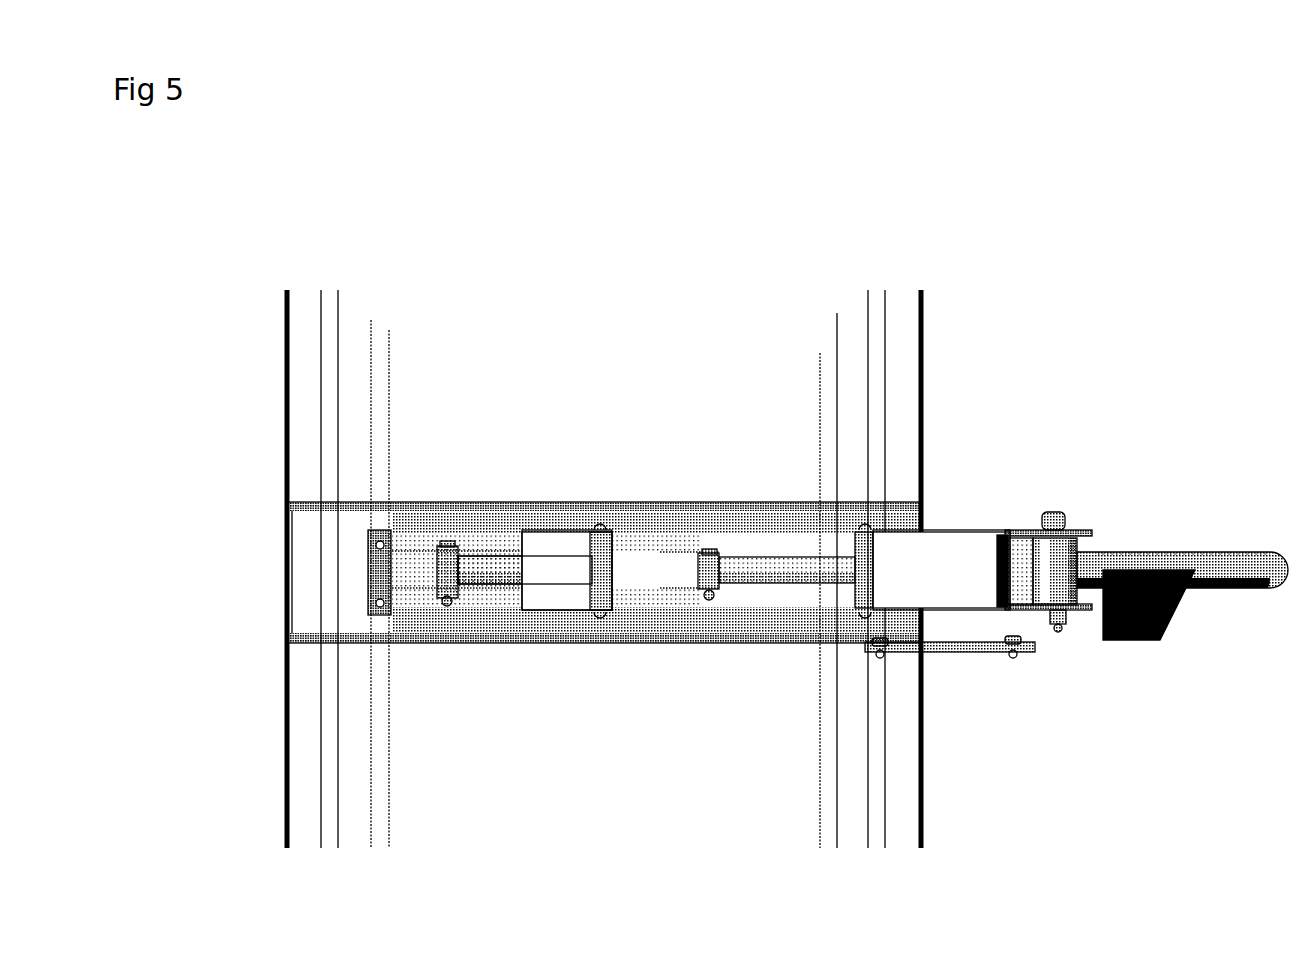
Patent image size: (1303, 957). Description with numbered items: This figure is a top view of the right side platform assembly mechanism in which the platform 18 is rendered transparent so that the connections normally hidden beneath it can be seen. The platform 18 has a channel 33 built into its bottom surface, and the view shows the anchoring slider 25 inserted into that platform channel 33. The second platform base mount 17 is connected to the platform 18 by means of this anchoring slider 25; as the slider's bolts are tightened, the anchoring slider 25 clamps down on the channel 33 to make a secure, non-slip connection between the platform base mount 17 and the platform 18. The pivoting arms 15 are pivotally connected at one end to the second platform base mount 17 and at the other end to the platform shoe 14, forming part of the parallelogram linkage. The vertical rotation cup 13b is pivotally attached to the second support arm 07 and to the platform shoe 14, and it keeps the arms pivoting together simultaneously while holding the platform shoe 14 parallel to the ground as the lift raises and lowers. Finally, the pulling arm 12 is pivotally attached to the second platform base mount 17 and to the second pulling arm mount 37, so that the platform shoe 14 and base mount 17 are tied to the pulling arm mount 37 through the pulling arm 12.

The platform 18 is at (765, 335).
The channel 33 is at (383, 470).
The second platform base mount 17 is at (476, 525).
The anchoring slider 25 is at (377, 568).
The pivoting arm 15 is at (535, 567).
The platform shoe 14 is at (935, 562).
The vertical rotation cup 13b is at (1013, 540).
The second support arm 07 is at (1205, 555).
The second pulling arm mount 37 is at (1110, 625).
The pulling arm 12 is at (933, 648).